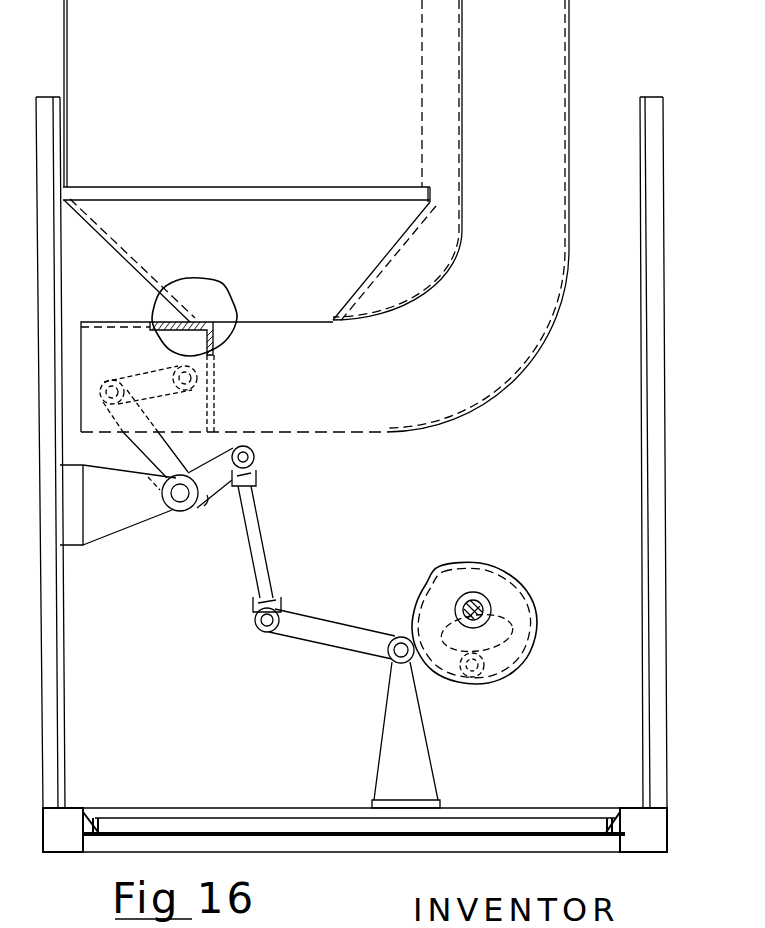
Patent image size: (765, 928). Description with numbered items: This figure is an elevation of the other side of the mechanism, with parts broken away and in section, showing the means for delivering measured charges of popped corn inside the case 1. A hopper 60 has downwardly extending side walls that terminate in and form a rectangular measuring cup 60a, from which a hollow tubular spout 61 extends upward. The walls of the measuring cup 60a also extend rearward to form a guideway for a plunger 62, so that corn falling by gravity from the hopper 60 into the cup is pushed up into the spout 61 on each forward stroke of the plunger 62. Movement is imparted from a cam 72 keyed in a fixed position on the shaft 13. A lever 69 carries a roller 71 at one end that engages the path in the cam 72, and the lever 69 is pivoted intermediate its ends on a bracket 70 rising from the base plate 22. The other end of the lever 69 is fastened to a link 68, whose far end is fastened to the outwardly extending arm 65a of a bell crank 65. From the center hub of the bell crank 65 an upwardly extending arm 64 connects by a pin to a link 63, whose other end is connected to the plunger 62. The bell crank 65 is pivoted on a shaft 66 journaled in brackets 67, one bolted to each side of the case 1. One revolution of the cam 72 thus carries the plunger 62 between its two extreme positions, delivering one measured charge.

The case 1 is at (653, 690).
The shaft 13 is at (479, 604).
The base plate 22 is at (236, 808).
The hopper 60 is at (249, 162).
The measuring cup 60a is at (234, 377).
The spout 61 is at (451, 216).
The plunger 62 is at (206, 324).
The link 63 is at (157, 374).
The arm 64 is at (148, 456).
The bell crank 65 is at (161, 501).
The arm 65a is at (213, 499).
The shaft 66 is at (174, 513).
The brackets 67 is at (127, 534).
The link 68 is at (262, 539).
The lever 69 is at (310, 631).
The bracket 70 is at (392, 706).
The roller 71 is at (487, 675).
The cam 72 is at (538, 630).